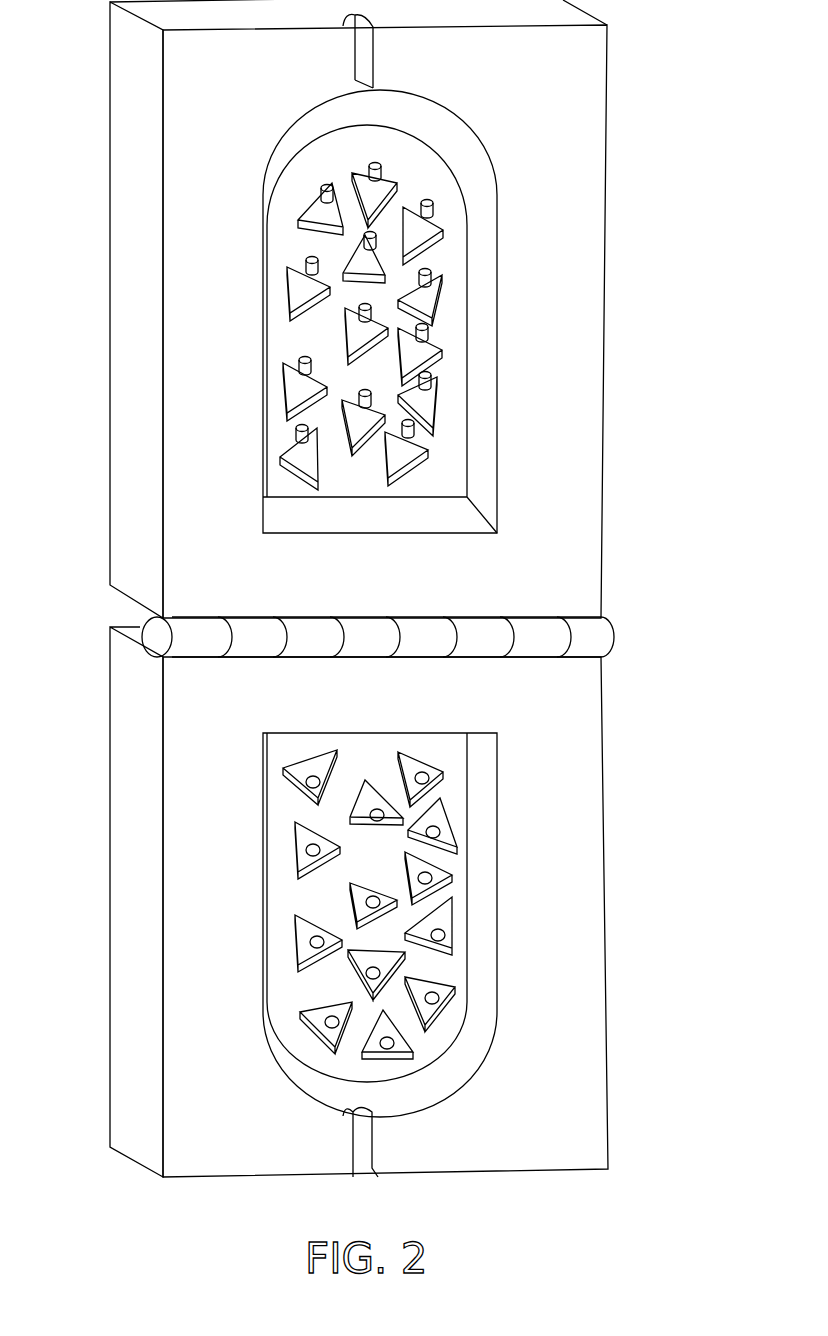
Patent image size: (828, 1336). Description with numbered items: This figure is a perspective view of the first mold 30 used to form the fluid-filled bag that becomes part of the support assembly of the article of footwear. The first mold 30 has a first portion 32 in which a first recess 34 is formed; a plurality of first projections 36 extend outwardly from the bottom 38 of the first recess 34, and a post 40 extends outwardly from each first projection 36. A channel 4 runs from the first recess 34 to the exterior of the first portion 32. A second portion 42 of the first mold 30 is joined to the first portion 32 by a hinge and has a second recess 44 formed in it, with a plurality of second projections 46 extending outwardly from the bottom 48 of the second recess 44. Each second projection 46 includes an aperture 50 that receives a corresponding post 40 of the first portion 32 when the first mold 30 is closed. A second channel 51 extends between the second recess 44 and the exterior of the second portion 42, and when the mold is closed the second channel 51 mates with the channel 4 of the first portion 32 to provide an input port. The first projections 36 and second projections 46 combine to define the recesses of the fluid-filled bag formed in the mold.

The channel 4 is at (375, 58).
The first mold 30 is at (636, 410).
The first portion 32 is at (598, 87).
The first recess 34 is at (484, 382).
The first projections 36 is at (440, 238).
The bottom of first recess 38 is at (455, 480).
The post 40 is at (427, 200).
The second portion 42 is at (598, 854).
The second recess 44 is at (462, 1062).
The second projections 46 is at (443, 772).
The bottom of second recess 48 is at (458, 902).
The aperture 50 is at (421, 772).
The second channel 51 is at (352, 1145).